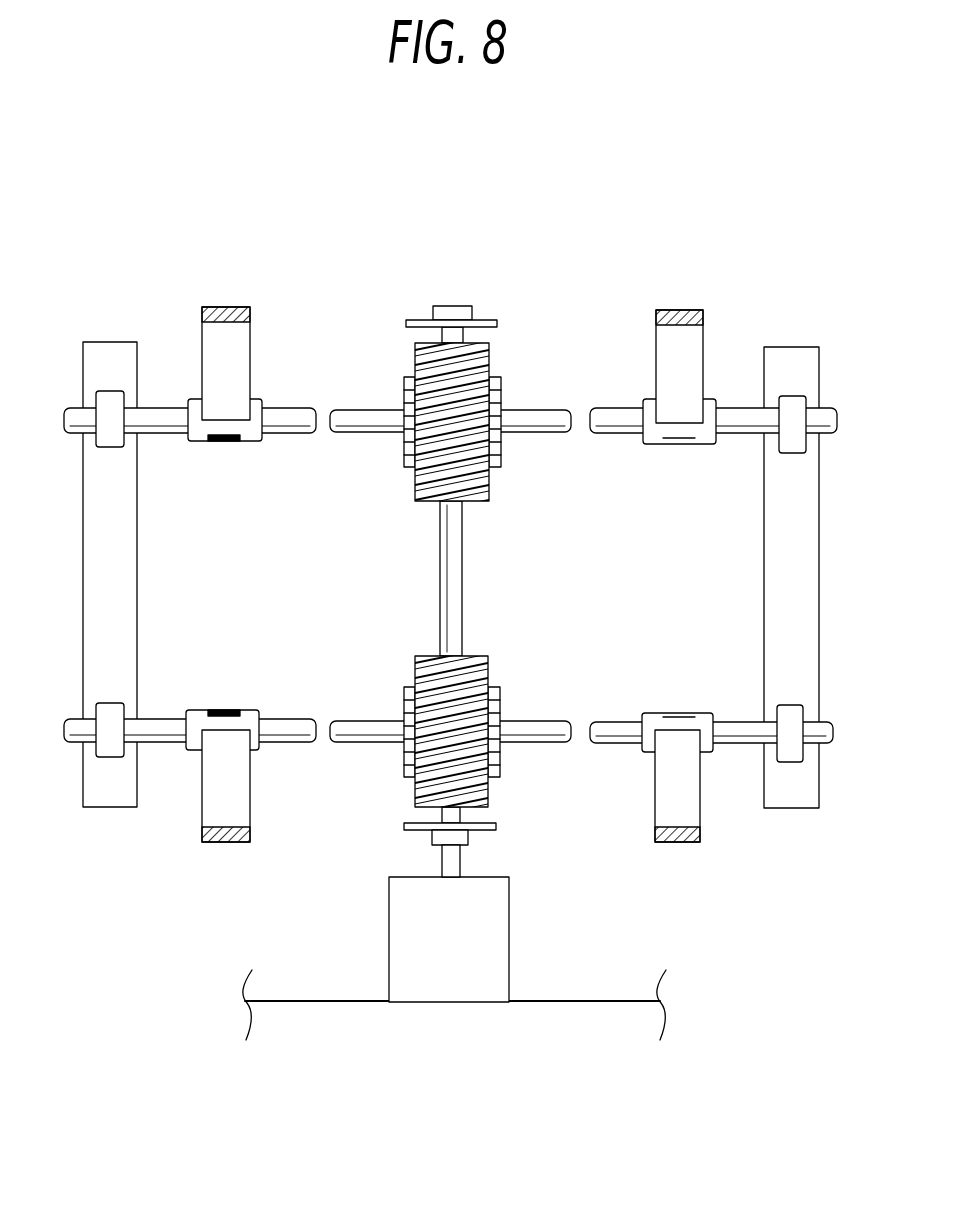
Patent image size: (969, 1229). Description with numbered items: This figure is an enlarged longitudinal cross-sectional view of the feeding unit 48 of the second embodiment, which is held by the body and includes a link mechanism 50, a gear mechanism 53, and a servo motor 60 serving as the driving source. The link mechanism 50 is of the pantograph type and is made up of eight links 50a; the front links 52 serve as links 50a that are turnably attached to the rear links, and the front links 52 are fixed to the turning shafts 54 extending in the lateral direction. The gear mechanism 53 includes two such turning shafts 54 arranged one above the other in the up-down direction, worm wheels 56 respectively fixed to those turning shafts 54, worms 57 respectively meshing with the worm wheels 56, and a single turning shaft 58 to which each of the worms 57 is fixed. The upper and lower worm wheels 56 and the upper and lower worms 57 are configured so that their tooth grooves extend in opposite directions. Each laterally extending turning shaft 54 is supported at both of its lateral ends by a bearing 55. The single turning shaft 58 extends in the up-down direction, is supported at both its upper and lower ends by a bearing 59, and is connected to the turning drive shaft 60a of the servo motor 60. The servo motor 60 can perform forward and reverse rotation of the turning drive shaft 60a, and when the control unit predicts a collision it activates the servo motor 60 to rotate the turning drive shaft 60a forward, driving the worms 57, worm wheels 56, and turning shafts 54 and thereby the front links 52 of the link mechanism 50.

The feeding unit 48 is at (171, 208).
The link mechanism 50 is at (733, 236).
The link 50a is at (451, 577).
The front link 52 is at (225, 335).
The gear mechanism 53 is at (520, 355).
The turning shaft 54 is at (287, 413).
The bearing 55 is at (109, 400).
The worm wheel 56 is at (500, 450).
The worm 57 is at (418, 490).
The turning shaft 58 is at (462, 565).
The bearing 59 is at (478, 318).
The servo motor 60 is at (437, 958).
The turning drive shaft 60a is at (445, 860).